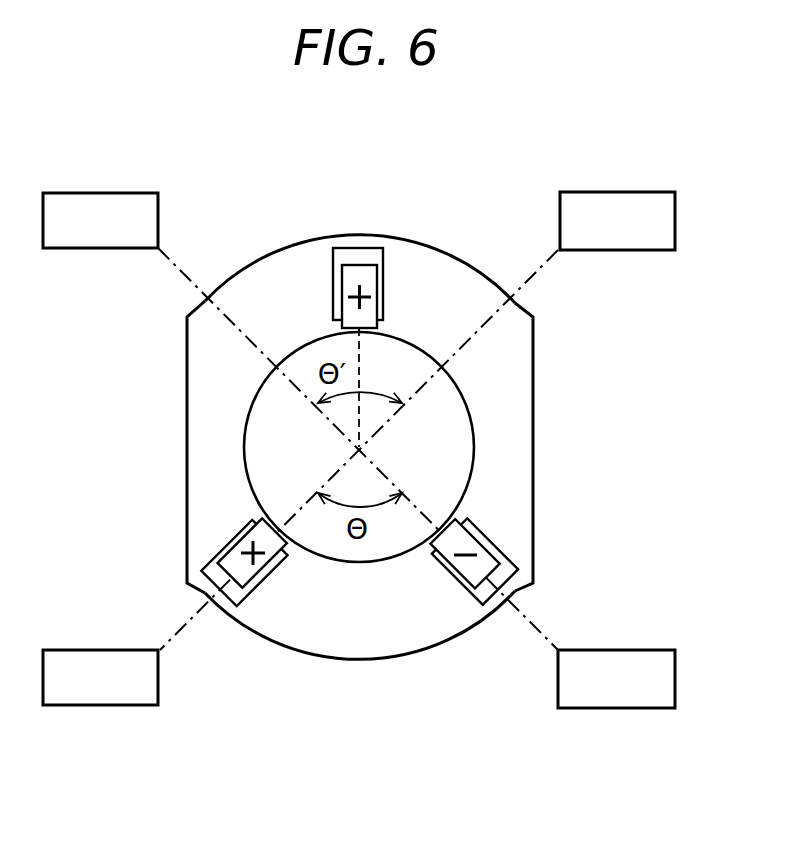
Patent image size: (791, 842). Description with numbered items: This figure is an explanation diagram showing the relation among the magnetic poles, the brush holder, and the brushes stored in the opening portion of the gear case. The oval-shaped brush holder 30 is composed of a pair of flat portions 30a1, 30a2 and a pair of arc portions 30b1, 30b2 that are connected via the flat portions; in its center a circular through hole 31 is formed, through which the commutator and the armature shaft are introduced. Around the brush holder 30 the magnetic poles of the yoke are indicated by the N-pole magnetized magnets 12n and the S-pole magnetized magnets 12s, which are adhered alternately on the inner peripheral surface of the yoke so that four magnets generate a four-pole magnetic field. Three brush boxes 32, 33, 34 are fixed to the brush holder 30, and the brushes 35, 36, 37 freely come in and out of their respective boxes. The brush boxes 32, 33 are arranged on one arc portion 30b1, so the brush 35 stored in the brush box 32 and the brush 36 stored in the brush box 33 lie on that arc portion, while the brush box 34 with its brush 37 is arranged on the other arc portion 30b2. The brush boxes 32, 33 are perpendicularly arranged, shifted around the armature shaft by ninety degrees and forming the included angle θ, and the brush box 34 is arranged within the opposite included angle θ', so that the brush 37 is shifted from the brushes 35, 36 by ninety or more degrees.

The S-pole magnetized magnet 12s is at (92, 192).
The N-pole magnetized magnet 12n is at (622, 192).
The brush holder 30 is at (368, 480).
The flat portion 30a1 is at (187, 393).
The flat portion 30a2 is at (533, 438).
The arc portion 30b1 is at (360, 660).
The arc portion 30b2 is at (238, 272).
The through hole 31 is at (466, 420).
The brush box 32 is at (212, 567).
The brush box 33 is at (478, 610).
The brush box 34 is at (336, 249).
The brush 35 is at (232, 614).
The brush 36 is at (500, 578).
The brush 37 is at (376, 264).